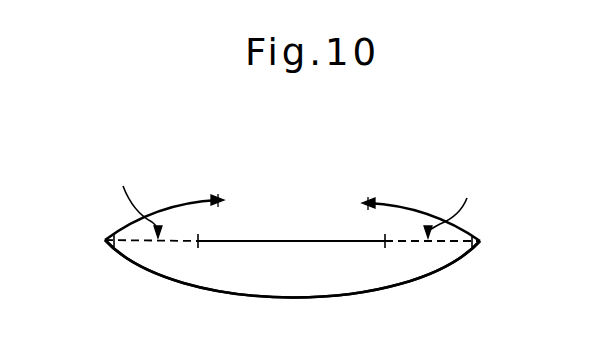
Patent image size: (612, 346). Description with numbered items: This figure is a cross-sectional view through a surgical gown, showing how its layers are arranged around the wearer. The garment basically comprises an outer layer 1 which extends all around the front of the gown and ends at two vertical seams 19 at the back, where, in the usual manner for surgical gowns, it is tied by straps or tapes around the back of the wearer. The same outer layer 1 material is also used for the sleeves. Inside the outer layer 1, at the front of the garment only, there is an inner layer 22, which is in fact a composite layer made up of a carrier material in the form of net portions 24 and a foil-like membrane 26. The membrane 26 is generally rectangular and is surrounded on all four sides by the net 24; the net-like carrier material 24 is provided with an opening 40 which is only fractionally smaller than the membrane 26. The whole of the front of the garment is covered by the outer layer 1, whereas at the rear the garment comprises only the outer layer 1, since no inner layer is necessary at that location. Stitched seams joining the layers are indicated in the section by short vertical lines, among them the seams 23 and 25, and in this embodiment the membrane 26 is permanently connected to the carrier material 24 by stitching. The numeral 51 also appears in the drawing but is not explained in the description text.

The outer layer 1 is at (355, 293).
The vertical seams 19 is at (224, 191).
The inner layer 22 is at (261, 252).
The stitched seam 23 is at (112, 249).
The net portions 24 is at (297, 198).
The stitched seam 25 is at (217, 197).
The foil-like membrane 26 is at (287, 241).
The opening 40 is at (353, 240).
The boundary point 51 is at (204, 246).